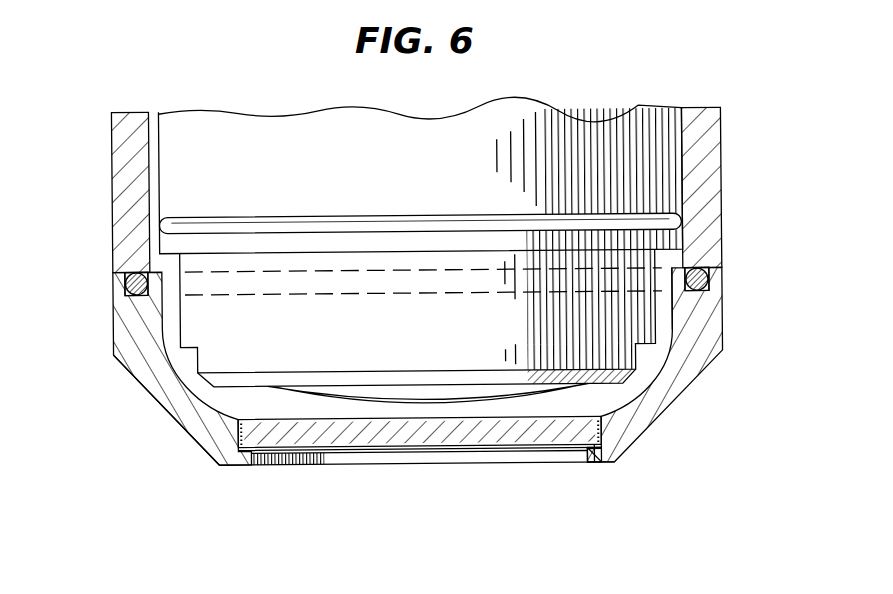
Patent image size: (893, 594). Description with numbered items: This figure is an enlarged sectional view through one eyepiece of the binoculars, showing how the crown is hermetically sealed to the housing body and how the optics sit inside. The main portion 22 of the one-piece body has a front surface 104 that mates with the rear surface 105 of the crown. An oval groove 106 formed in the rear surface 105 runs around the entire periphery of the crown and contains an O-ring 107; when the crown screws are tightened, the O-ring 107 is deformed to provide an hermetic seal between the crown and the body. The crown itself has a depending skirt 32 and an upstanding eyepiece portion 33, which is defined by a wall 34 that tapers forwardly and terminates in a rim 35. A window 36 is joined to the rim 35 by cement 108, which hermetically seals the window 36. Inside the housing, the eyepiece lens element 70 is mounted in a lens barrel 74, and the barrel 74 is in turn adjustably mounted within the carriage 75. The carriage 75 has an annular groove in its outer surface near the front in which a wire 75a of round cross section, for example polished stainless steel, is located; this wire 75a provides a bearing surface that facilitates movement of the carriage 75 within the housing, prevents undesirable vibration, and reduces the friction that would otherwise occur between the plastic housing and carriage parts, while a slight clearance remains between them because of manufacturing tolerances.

The main portion 22 is at (125, 215).
The depending skirt 32 is at (122, 325).
The eyepiece portion 33 is at (211, 467).
The wall 34 is at (183, 418).
The rim 35 is at (245, 468).
The window 36 is at (495, 437).
The lens element 70 is at (435, 397).
The lens barrel 74 is at (197, 328).
The carriage 75 is at (640, 124).
The wire 75a is at (157, 221).
The front surface 104 is at (718, 246).
The rear surface 105 is at (717, 271).
The oval groove 106 is at (712, 300).
The O-ring 107 is at (122, 290).
The cement 108 is at (593, 465).